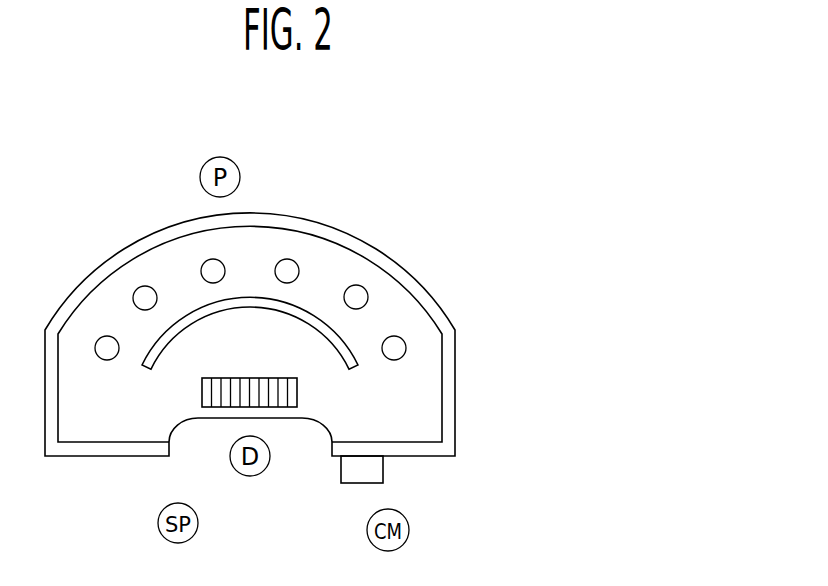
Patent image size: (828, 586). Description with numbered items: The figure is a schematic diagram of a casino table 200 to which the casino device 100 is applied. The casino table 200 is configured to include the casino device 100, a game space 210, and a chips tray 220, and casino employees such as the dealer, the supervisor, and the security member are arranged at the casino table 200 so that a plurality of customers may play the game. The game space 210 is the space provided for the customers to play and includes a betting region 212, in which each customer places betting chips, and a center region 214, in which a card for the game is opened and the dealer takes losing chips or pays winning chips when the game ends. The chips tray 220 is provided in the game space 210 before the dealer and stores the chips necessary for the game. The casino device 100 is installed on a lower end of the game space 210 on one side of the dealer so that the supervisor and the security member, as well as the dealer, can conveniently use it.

The casino device 100 is at (395, 465).
The casino table 200 is at (482, 132).
The game space 210 is at (430, 257).
The betting region 212 is at (288, 259).
The center region 214 is at (248, 340).
The chips tray 220 is at (308, 390).